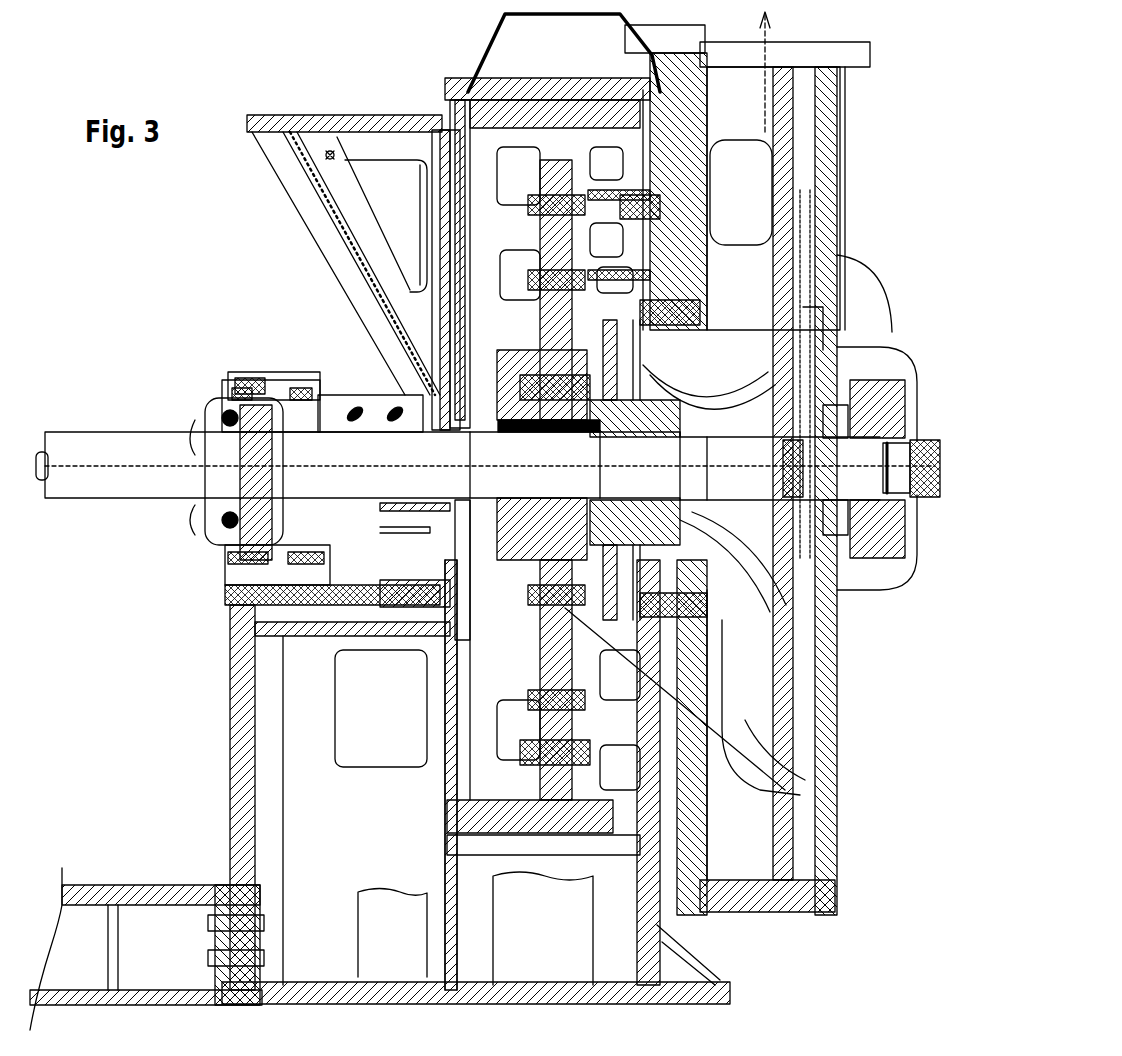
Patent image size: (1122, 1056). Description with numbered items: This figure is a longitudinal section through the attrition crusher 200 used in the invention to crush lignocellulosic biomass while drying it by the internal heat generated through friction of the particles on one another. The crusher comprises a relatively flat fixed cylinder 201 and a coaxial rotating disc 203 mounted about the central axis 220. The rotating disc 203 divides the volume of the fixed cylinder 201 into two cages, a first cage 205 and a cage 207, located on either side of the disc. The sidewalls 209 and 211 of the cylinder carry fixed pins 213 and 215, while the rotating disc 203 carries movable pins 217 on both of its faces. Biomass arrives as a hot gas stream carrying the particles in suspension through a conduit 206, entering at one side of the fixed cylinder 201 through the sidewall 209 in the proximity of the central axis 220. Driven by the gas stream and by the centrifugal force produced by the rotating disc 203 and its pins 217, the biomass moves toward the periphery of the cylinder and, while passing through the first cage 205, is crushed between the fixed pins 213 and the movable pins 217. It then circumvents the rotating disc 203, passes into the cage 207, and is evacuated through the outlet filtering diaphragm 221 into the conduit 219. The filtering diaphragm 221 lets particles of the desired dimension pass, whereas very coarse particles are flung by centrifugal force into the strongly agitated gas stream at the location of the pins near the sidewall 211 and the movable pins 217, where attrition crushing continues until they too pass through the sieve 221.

The pump assembly 200 is at (180, 345).
The fixed cylinder 201 is at (450, 95).
The rotating disc 203 is at (728, 738).
The first cage 205 is at (440, 372).
The conduit 206 is at (455, 312).
The cage 207 is at (745, 290).
The sidewall 209 is at (441, 256).
The sidewall 211 is at (707, 142).
The fixed pins 213 is at (500, 252).
The fixed pins 215 is at (613, 207).
The movable pins 217 is at (517, 173).
The conduit 219 is at (585, 372).
The central axis 220 is at (226, 540).
The outlet filtering diaphragm 221 is at (640, 375).